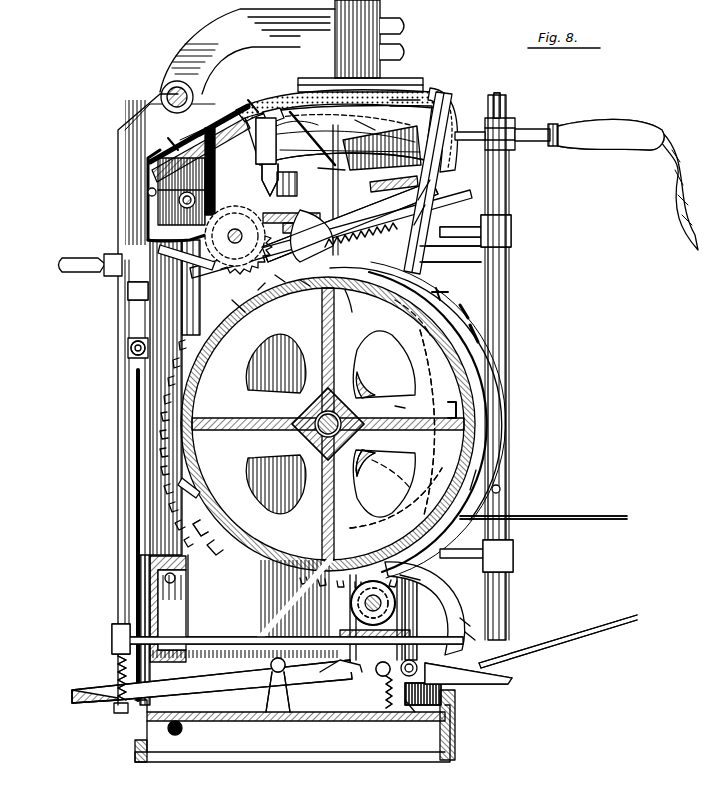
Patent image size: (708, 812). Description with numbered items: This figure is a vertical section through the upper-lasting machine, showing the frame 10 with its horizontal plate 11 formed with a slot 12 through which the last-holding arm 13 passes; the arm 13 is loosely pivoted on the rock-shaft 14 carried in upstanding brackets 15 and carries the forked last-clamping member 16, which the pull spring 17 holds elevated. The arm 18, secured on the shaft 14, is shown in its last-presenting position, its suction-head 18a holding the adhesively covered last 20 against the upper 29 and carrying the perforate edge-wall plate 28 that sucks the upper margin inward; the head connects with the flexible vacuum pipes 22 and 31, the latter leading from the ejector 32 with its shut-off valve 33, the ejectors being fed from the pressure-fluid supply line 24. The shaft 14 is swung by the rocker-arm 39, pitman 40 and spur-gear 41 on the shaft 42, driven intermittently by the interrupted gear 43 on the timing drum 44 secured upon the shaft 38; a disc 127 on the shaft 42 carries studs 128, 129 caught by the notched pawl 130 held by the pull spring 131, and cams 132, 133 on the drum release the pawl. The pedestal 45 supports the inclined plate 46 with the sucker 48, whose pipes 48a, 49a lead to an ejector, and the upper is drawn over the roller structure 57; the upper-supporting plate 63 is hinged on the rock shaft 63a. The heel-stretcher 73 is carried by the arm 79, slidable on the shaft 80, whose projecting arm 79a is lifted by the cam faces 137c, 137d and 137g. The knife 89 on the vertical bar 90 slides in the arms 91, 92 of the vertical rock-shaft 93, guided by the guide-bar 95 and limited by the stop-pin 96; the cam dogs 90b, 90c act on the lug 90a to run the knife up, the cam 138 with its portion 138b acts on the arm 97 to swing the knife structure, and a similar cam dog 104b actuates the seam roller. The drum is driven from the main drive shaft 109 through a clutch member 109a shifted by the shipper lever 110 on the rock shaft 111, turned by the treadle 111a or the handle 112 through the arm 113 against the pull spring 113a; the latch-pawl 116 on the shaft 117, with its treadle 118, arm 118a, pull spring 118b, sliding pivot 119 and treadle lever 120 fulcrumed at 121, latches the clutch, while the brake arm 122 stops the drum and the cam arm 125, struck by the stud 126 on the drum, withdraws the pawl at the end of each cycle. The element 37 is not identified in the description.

The frame 10 is at (262, 595).
The horizontal plate 11 is at (306, 232).
The slot 12 is at (418, 226).
The last-holding arm 13 is at (424, 198).
The rock-shaft 14 is at (166, 92).
The upstanding brackets 15 is at (150, 126).
The forked last-clamping member 16 is at (432, 176).
The pull spring 17 is at (306, 286).
The arm 18 is at (262, 18).
The suction-head 18a is at (312, 80).
The last 20 is at (456, 100).
The flexible vacuum pipe 22 is at (396, 52).
The pressure-fluid supply line 24 is at (180, 726).
The perforate edge-wall plate 28 is at (402, 95).
The upper 29 is at (274, 110).
The flexible vacuum pipe 31 is at (394, 26).
The ejector 32 is at (130, 292).
The shut-off valve 33 is at (130, 348).
The wheel opening 37 is at (392, 456).
The shaft 38 is at (356, 408).
The rocker-arm 39 is at (206, 100).
The pitman 40 is at (268, 160).
The spur-gear 41 is at (268, 190).
The shaft 42 is at (228, 236).
The interrupted gear 43 is at (212, 496).
The timing drum 44 is at (476, 478).
The pedestal 45 is at (158, 188).
The inclined plate 46 is at (158, 160).
The sucker 48 is at (228, 118).
The flexible pipe 48a is at (168, 140).
The flexible pipe 49a is at (330, 168).
The roller structure 57 is at (250, 100).
The upper-supporting plate 63 is at (340, 232).
The rock shaft 63a is at (362, 122).
The heel-stretcher 73 is at (470, 130).
The arm 79 is at (468, 228).
The arm 79a is at (472, 247).
The shaft 80 is at (458, 263).
The knife 89 is at (506, 126).
The vertical bar 90 is at (506, 332).
The lug 90a is at (482, 386).
The cam dog 90b is at (448, 410).
The cam dog 90c is at (414, 512).
The horizontal arm 91 is at (512, 230).
The horizontal arm 92 is at (514, 550).
The vertical rock-shaft 93 is at (442, 293).
The vertical guide-bar 95 is at (501, 105).
The stop-pin 96 is at (501, 490).
The arm 97 is at (404, 410).
The cam dog 104b is at (190, 490).
The main drive shaft 109 is at (400, 592).
The clutch member 109a is at (400, 602).
The shipper lever 110 is at (420, 622).
The rock shaft 111 is at (222, 637).
The treadle 111a is at (512, 656).
The handle 112 is at (70, 270).
The arm 113 is at (112, 644).
The pull spring 113a is at (117, 670).
The latch-pawl 116 is at (440, 636).
The shaft 117 is at (444, 696).
The treadle 118 is at (504, 680).
The rearwardly extending arm 118a is at (410, 706).
The pull spring 118b is at (392, 714).
The sliding pivot 119 is at (378, 675).
The two armed treadle lever 120 is at (100, 702).
The bracket 121 is at (280, 690).
The brake arm 122 is at (345, 668).
The cam arm 125 is at (400, 580).
The stud 126 is at (350, 300).
The disc 127 is at (258, 222).
The stud 128 is at (280, 280).
The stud 129 is at (160, 249).
The notched pawl 130 is at (240, 312).
The pull spring 131 is at (180, 204).
The cam 132 is at (212, 535).
The cam 133 is at (470, 516).
The circumferential upstanding face 137c is at (470, 296).
The oblique upstanding face 137d is at (468, 318).
The cylindrical face 137g is at (476, 340).
The cam 138 is at (496, 443).
The cam portion 138b is at (412, 488).